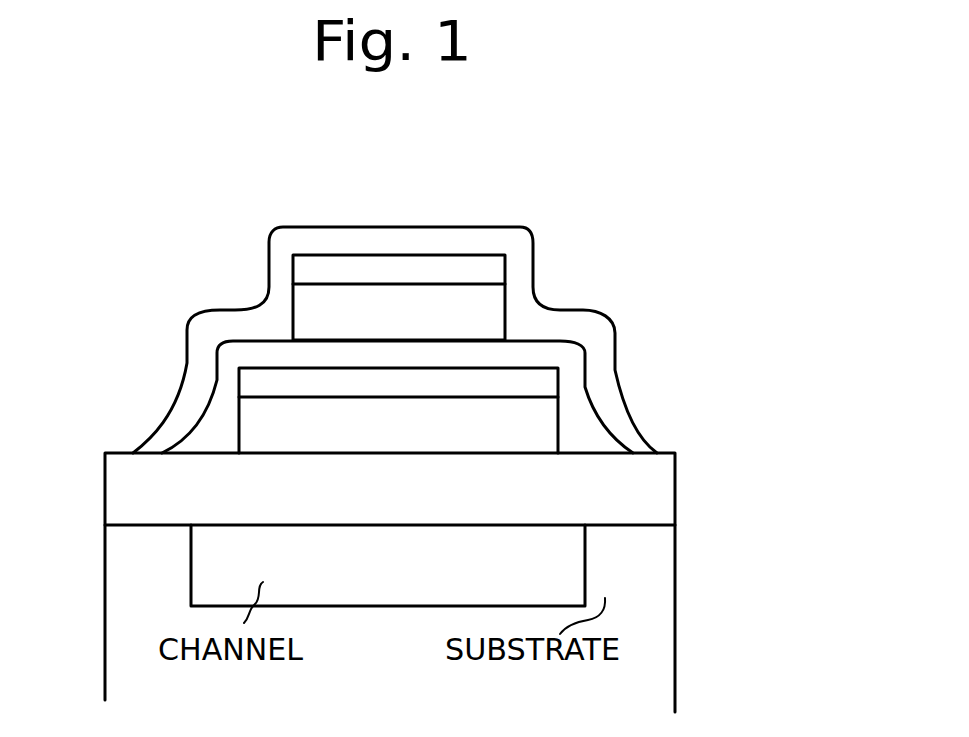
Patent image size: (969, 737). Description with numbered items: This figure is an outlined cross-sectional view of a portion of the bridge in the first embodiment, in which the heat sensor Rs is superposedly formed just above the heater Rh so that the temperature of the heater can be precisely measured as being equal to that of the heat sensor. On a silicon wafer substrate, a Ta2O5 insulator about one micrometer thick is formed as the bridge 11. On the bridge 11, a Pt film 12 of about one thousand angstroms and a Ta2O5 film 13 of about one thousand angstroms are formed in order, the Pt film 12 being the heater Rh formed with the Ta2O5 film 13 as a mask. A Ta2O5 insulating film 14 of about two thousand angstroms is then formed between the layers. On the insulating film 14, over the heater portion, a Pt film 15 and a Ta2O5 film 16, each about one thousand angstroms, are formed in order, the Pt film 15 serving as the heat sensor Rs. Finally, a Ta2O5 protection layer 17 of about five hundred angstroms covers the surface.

The bridge 11 is at (113, 483).
The Pt film 12 is at (323, 430).
The Ta2O5 film 13 is at (402, 385).
The insulating film 14 is at (558, 338).
The Pt film 15 is at (398, 290).
The Ta2O5 film 16 is at (457, 263).
The protection layer 17 is at (513, 240).